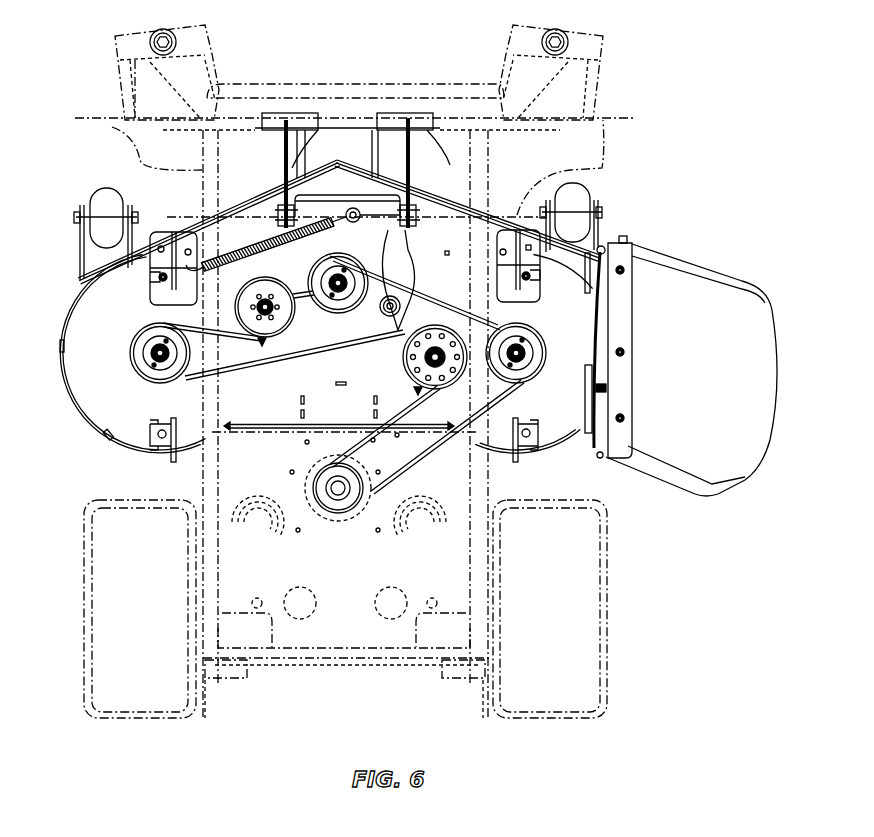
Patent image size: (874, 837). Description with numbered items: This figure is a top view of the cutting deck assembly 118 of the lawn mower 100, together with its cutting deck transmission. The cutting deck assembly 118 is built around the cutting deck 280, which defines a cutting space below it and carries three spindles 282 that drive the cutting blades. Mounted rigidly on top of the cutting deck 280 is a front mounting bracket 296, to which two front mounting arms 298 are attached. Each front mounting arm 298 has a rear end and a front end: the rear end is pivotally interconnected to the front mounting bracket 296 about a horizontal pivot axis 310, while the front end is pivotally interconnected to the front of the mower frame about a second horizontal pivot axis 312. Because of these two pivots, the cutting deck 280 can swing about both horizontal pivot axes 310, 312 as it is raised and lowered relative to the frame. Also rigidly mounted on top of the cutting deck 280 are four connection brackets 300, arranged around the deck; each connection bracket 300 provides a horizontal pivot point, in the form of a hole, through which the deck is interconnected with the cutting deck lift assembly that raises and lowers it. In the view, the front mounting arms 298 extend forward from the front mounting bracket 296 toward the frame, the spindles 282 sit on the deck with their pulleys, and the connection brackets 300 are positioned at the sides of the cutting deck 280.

The riding lawn mower 100 is at (82, 80).
The cutting deck assembly 118 is at (88, 440).
The cutting deck 280 is at (572, 279).
The spindles 282 is at (346, 282).
The front mounting bracket 296 is at (353, 207).
The front mounting arms 298 is at (283, 150).
The connection brackets 300 is at (175, 236).
The horizontal pivot axis 310 is at (602, 169).
The horizontal pivot axis 312 is at (112, 130).